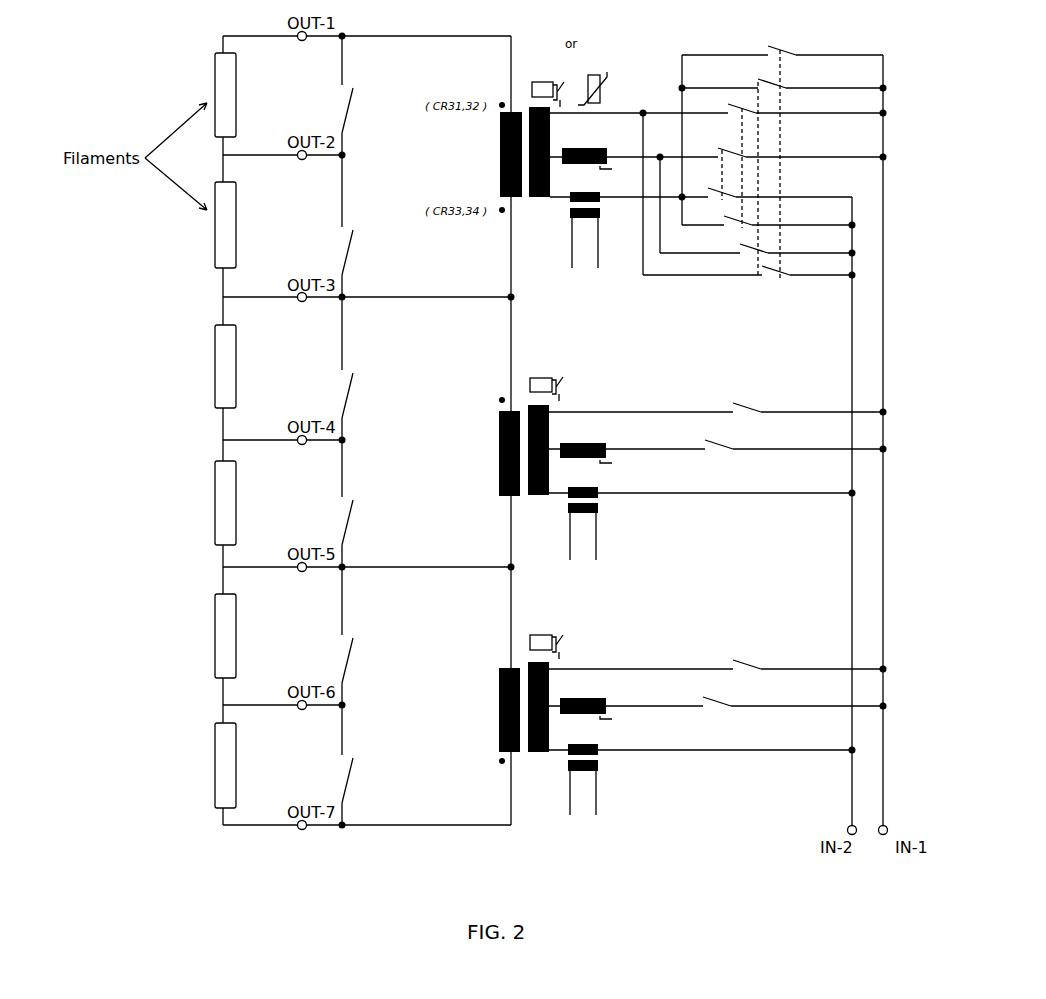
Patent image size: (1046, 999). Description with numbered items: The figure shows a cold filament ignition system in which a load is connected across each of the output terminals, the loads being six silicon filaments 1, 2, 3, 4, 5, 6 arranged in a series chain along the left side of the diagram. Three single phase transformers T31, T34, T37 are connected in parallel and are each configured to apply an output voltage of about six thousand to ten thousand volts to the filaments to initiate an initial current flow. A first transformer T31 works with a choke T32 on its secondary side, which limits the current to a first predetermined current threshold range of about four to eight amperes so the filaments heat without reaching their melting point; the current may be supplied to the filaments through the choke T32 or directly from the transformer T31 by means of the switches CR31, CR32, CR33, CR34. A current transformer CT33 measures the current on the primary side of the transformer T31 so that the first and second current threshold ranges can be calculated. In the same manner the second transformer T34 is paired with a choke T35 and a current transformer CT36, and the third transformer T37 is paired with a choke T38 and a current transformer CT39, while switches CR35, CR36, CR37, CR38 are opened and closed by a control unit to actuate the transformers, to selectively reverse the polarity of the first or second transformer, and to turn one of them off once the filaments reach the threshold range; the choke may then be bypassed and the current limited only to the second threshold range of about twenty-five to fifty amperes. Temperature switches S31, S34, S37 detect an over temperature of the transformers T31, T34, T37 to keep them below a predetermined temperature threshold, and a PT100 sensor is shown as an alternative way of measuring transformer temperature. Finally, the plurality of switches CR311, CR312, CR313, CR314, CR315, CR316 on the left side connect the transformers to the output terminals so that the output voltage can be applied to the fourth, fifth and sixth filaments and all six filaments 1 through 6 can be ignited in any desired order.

The filament 1 is at (225, 95).
The filament 2 is at (225, 366).
The filament 3 is at (225, 636).
The filament 4 is at (225, 225).
The filament 5 is at (225, 503).
The filament 6 is at (225, 765).
The switch CR311 is at (379, 95).
The switch CR312 is at (380, 226).
The switch CR313 is at (381, 368).
The switch CR314 is at (381, 503).
The switch CR315 is at (381, 636).
The switch CR316 is at (381, 765).
The transformer T31 is at (515, 144).
The choke T32 is at (605, 148).
The current transformer CT33 is at (616, 230).
The temperature switch S31 is at (547, 85).
The temperature sensor PT100 is at (606, 80).
The switch CR31 is at (771, 165).
The switch CR32 is at (782, 170).
The switch CR33 is at (738, 158).
The switch CR34 is at (782, 155).
The transformer T34 is at (515, 437).
The temperature switch S34 is at (546, 380).
The choke T35 is at (627, 444).
The current transformer CT36 is at (700, 523).
The switch CR35 is at (793, 436).
The switch CR36 is at (716, 400).
The transformer T37 is at (514, 706).
The temperature switch S37 is at (546, 637).
The choke T38 is at (626, 700).
The current transformer CT39 is at (700, 779).
The switch CR37 is at (793, 693).
The switch CR38 is at (716, 656).